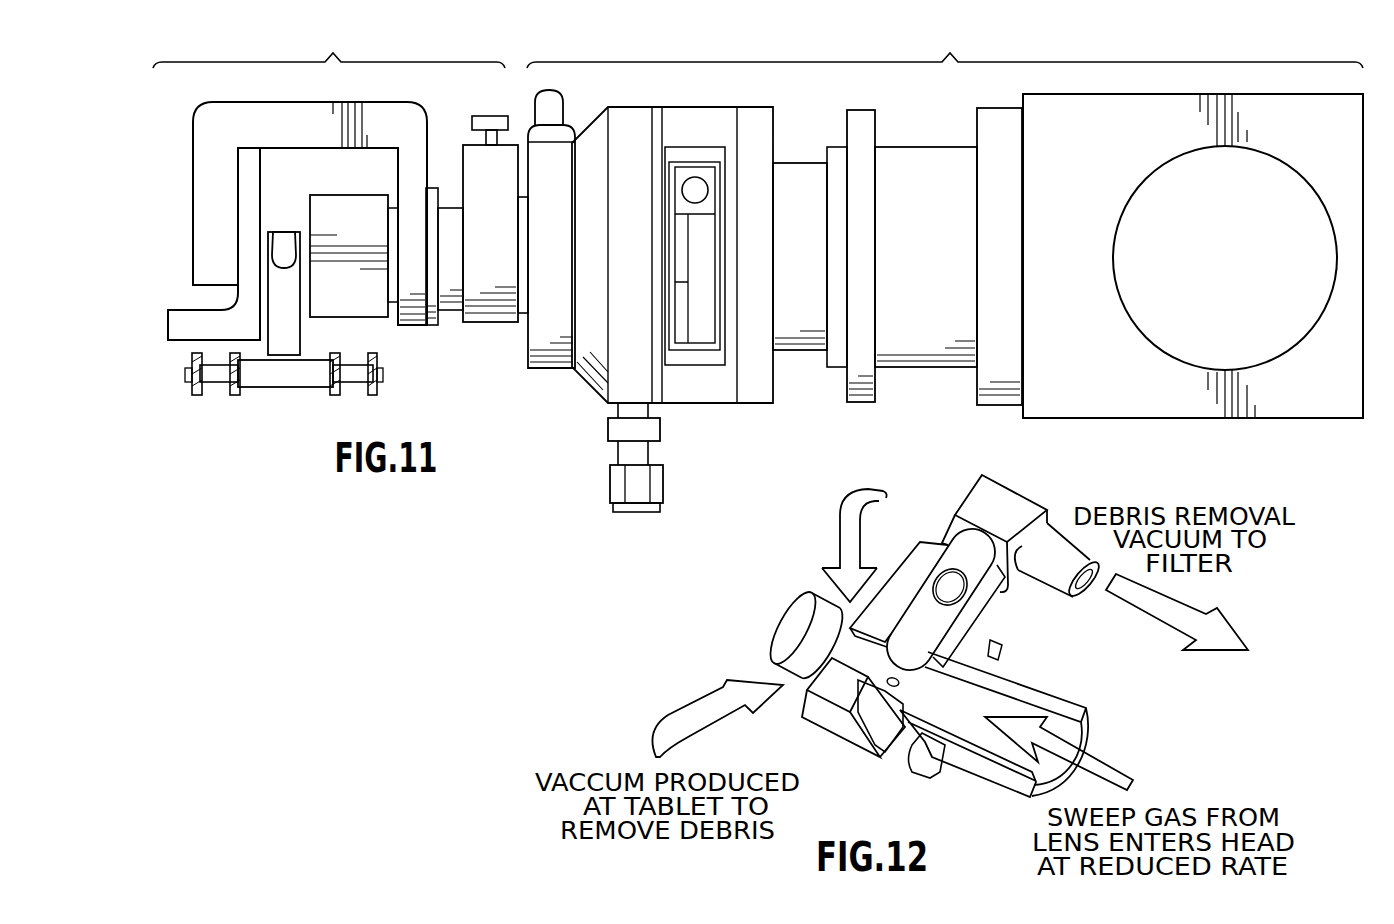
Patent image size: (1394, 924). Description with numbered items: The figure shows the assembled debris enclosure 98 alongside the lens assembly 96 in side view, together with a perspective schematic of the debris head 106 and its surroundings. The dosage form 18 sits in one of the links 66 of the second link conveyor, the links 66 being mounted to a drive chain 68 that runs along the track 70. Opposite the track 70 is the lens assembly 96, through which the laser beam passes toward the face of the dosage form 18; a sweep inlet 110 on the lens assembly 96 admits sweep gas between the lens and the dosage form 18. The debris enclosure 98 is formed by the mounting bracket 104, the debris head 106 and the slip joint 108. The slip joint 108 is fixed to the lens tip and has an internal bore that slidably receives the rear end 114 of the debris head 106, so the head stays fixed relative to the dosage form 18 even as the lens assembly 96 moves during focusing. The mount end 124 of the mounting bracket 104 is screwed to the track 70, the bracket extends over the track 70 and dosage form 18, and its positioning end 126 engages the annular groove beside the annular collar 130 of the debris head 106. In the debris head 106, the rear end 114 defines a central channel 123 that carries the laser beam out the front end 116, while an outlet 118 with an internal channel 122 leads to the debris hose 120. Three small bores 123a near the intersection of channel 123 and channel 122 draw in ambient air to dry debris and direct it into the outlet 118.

In FIG. 11, the dosage form 18 is at (287, 242).
In FIG. 12, the dosage form 18 is at (782, 612).
In FIG. 11, the links 66 is at (295, 333).
In FIG. 11, the drive chain 68 is at (229, 388).
In FIG. 11, the track 70 is at (177, 314).
In FIG. 11, the lens assembly 96 is at (945, 221).
In FIG. 11, the debris enclosure 98 is at (329, 46).
In FIG. 11, the mounting bracket 104 is at (325, 137).
In FIG. 11, the debris head 106 is at (350, 210).
In FIG. 12, the debris head 106 is at (716, 626).
In FIG. 11, the slip joint 108 is at (491, 324).
In FIG. 11, the sweep inlet 110 is at (608, 485).
In FIG. 12, the rear end 114 is at (985, 776).
In FIG. 12, the front end 116 is at (818, 720).
In FIG. 12, the outlet 118 is at (912, 573).
In FIG. 12, the debris hose 120 is at (1023, 502).
In FIG. 12, the internal channel 122 is at (930, 624).
In FIG. 12, the central channel 123 is at (1043, 705).
In FIG. 12, the small bores 123a is at (900, 684).
In FIG. 11, the mount end 124 is at (205, 177).
In FIG. 11, the positioning end 126 is at (413, 160).
In FIG. 11, the annular collar 130 is at (436, 328).